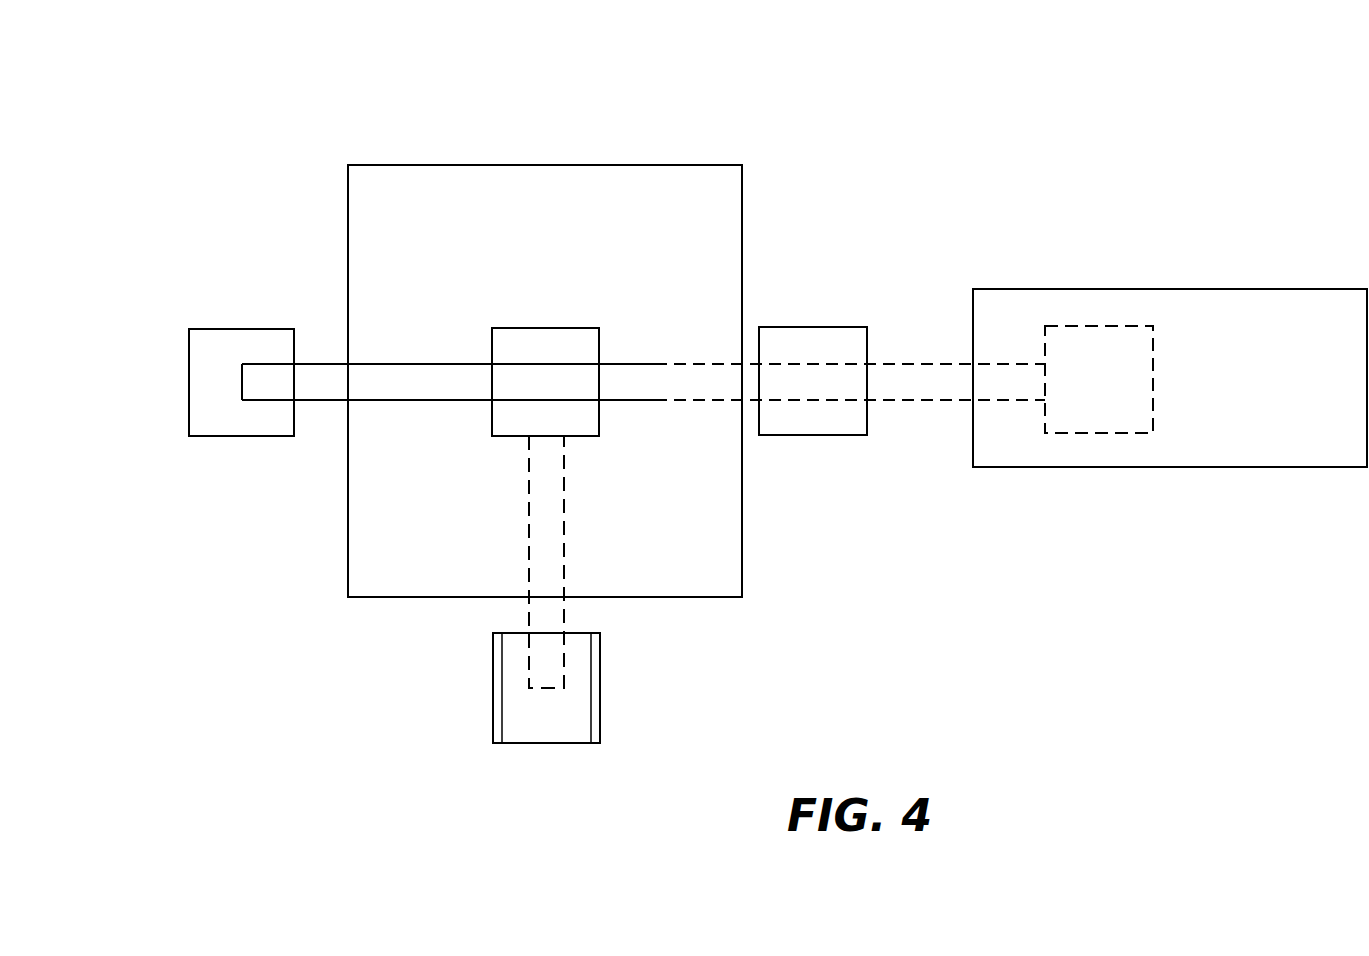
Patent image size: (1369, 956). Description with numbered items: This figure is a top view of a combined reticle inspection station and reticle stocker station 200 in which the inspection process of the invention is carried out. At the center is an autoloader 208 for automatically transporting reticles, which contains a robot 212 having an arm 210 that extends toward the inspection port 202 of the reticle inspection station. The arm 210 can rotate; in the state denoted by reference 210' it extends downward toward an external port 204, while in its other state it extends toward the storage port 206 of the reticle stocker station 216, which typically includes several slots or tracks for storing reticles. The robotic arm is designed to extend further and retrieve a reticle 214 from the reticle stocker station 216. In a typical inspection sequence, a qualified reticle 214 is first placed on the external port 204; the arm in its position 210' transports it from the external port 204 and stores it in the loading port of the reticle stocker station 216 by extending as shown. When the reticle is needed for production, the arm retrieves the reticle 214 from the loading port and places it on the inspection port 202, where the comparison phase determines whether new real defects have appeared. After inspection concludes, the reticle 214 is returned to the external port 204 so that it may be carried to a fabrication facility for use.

The reticle inspection station-reticle stocker station 200 is at (253, 122).
The inspection port 202 is at (185, 437).
The external port 204 is at (541, 743).
The storage port 206 is at (811, 327).
The autoloader 208 is at (518, 165).
The arm 210 is at (442, 421).
The arm state extending toward external port 210' is at (637, 562).
The robot 212 is at (531, 328).
The reticle 214 is at (1112, 326).
The reticle stocker station 216 is at (1247, 289).